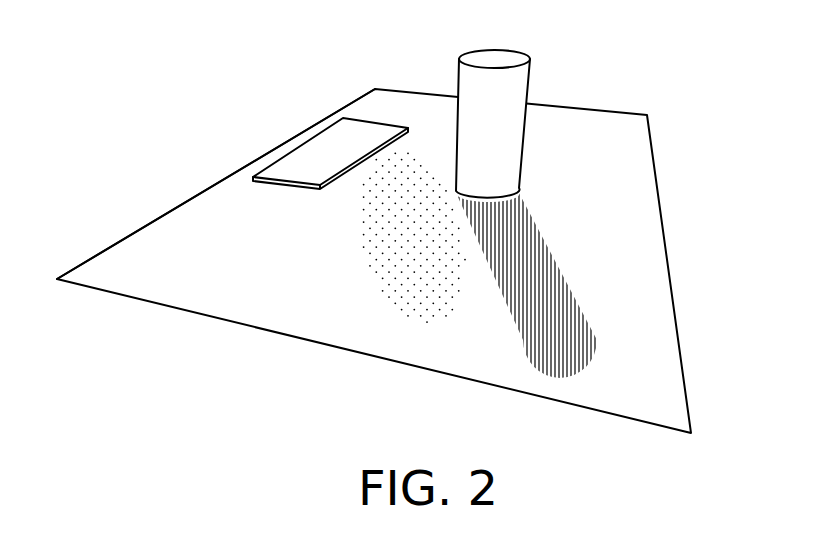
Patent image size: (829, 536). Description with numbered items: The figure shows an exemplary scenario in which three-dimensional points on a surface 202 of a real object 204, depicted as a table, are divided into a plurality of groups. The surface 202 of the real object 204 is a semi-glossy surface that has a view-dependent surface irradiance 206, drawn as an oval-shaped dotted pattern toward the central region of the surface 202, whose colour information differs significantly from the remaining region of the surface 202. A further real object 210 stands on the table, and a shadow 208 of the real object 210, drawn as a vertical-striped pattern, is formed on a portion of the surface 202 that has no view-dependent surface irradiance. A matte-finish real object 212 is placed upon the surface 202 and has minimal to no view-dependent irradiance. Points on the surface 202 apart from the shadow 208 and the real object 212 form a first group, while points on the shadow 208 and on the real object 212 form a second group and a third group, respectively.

The surface 202 is at (211, 184).
The real object 204 is at (404, 261).
The surface irradiance 206 is at (326, 284).
The shadow 208 is at (606, 290).
The real object 210 is at (541, 113).
The real object 212 is at (319, 137).